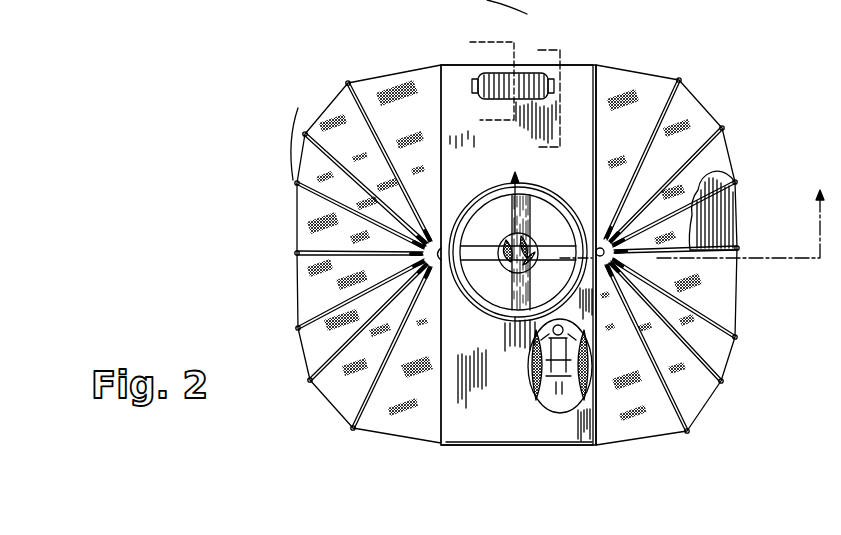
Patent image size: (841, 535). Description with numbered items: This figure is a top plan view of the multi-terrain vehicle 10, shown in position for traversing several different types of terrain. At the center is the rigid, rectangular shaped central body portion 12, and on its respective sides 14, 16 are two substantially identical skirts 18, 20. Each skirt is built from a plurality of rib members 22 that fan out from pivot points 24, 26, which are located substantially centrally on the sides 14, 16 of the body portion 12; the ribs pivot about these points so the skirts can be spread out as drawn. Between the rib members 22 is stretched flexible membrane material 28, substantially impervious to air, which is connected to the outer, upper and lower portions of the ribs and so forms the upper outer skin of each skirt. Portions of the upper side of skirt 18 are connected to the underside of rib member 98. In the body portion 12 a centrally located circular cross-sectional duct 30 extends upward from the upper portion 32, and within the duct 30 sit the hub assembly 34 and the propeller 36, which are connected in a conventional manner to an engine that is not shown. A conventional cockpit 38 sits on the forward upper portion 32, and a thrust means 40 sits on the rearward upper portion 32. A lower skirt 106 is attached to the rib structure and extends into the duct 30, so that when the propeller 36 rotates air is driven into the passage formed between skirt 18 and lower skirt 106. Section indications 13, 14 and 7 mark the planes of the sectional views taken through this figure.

The multi-terrain vehicle 10 is at (739, 97).
The central body portion 12 is at (599, 62).
The section line 13 is at (478, 82).
The side 14 is at (598, 382).
The side 16 is at (441, 404).
The skirt 18 is at (722, 302).
The skirt 20 is at (368, 93).
The rib members 22 is at (360, 118).
The pivot point 24 is at (598, 220).
The pivot point 26 is at (447, 232).
The flexible membrane material 28 is at (427, 125).
The duct 30 is at (546, 196).
The upper portion 32 is at (524, 145).
The hub assembly 34 is at (506, 266).
The propeller 36 is at (512, 212).
The cockpit 38 is at (547, 410).
The thrust means 40 is at (529, 72).
The member 98 is at (680, 79).
The lower skirt 106 is at (723, 220).
The section line 7 is at (693, 213).